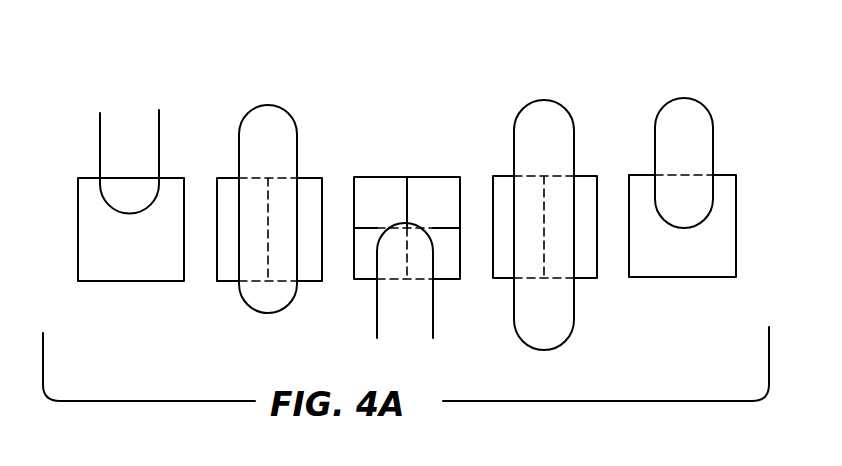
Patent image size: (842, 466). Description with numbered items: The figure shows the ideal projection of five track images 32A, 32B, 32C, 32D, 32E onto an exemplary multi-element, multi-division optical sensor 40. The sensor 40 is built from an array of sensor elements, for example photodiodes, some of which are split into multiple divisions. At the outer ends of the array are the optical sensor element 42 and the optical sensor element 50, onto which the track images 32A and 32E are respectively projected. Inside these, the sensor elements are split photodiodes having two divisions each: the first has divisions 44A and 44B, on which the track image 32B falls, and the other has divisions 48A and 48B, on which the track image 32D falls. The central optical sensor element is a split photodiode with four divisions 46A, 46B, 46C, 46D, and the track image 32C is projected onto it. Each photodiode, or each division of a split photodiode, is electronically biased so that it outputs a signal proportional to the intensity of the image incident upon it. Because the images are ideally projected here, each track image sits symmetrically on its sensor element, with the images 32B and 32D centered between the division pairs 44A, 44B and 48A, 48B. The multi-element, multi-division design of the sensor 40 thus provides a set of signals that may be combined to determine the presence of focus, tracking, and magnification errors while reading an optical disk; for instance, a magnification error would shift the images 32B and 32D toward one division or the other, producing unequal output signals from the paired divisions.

The optical sensor 40 is at (414, 74).
The optical sensor element 42 is at (127, 282).
The track image 32A is at (160, 133).
The track image 32B is at (272, 104).
The division of optical sensor element 44A is at (226, 282).
The division of optical sensor element 44B is at (305, 282).
The division of central optical sensor element 46A is at (372, 177).
The division of central optical sensor element 46B is at (430, 177).
The division of central optical sensor element 46C is at (455, 280).
The division of central optical sensor element 46D is at (360, 280).
The track image 32C is at (396, 222).
The track image 32D is at (521, 118).
The division of optical sensor element 48A is at (503, 279).
The division of optical sensor element 48B is at (590, 279).
The track image 32E is at (654, 122).
The optical sensor element 50 is at (665, 278).